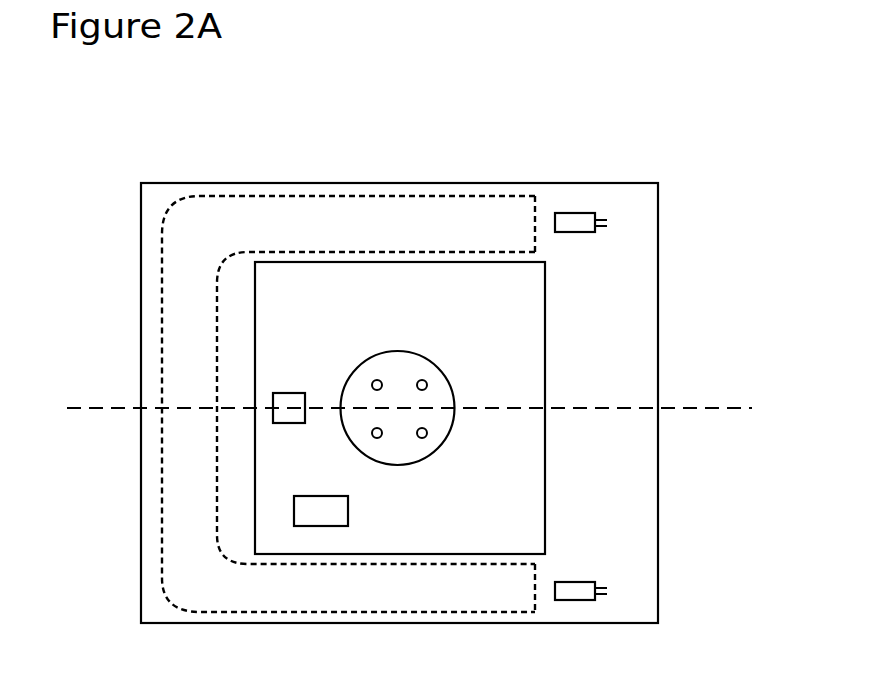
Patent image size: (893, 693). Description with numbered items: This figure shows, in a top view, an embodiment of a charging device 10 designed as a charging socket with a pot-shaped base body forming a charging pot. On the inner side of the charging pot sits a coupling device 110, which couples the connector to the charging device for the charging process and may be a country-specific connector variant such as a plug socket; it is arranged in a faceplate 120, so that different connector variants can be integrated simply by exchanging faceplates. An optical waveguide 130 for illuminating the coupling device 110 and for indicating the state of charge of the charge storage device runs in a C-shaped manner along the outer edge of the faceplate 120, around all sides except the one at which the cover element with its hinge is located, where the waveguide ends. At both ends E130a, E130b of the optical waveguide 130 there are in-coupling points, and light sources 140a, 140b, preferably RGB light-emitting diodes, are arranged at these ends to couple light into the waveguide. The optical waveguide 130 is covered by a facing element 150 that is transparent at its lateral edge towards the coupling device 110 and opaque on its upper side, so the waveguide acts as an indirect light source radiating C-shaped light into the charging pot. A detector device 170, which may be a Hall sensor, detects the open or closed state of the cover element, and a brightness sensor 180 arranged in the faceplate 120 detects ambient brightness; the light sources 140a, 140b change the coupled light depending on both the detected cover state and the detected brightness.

The charging device 10 is at (660, 153).
The coupling device 110 is at (418, 369).
The faceplate 120 is at (420, 283).
The optical waveguide 130 is at (286, 218).
The end of the optical waveguide E130a is at (535, 613).
The end of the optical waveguide E130b is at (537, 207).
The light source 140a is at (583, 595).
The light source 140b is at (576, 224).
The facing element 150 is at (606, 331).
The detector device 170 is at (284, 402).
The brightness sensor 180 is at (303, 527).